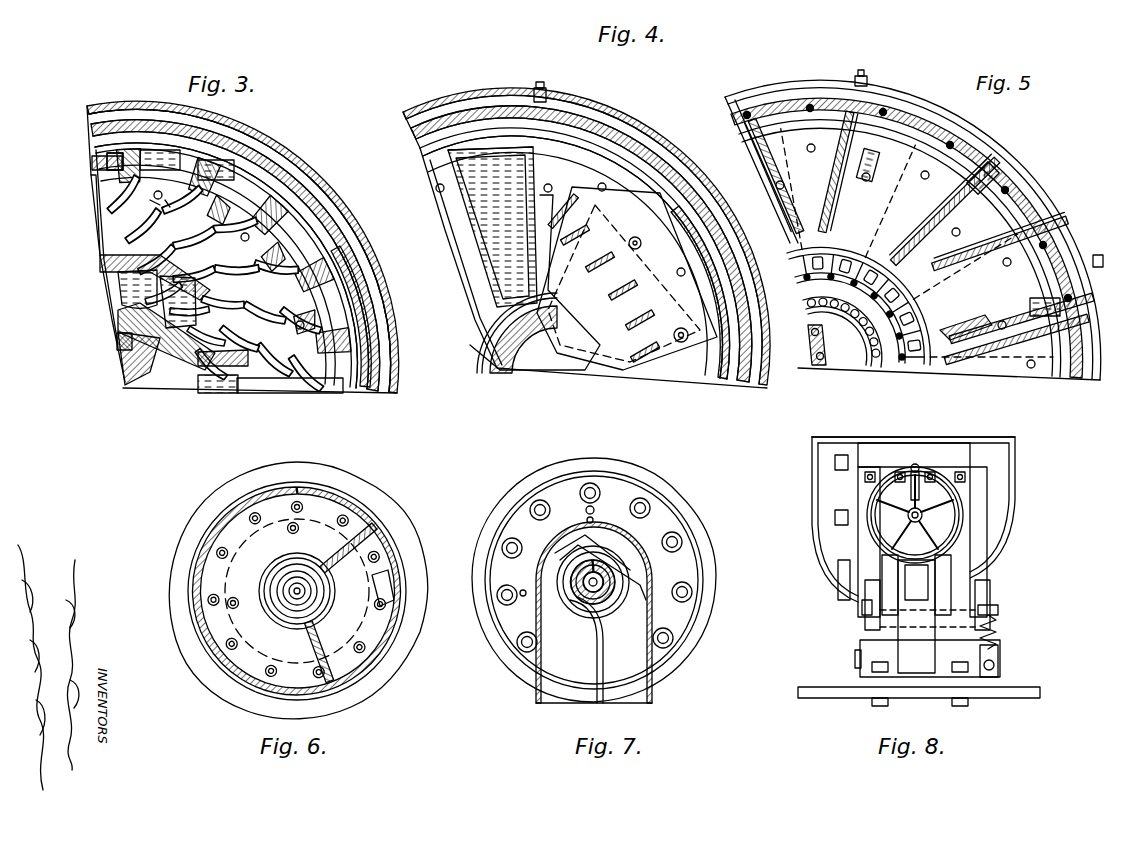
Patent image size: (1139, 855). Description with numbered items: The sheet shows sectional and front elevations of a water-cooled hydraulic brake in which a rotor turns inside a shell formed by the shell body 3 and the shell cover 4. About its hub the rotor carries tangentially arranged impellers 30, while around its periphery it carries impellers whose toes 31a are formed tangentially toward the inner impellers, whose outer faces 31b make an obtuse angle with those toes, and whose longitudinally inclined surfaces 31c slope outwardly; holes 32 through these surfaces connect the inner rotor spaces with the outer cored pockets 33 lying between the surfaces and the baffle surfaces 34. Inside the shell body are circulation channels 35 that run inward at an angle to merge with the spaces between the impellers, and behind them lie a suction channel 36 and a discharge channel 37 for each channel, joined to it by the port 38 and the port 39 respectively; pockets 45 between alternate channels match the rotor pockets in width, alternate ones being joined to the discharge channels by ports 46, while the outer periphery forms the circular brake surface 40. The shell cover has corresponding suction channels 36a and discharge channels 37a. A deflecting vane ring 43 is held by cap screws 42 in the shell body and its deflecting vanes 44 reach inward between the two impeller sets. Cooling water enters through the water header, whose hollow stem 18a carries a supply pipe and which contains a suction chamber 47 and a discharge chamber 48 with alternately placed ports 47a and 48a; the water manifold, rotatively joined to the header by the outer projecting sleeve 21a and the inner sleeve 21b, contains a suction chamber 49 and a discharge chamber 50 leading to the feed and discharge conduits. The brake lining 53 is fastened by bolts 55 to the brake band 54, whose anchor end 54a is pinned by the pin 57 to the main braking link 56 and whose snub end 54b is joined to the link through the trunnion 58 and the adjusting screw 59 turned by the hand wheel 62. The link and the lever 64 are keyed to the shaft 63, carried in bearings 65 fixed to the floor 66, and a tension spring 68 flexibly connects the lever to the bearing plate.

In FIG. 8, the shell body 3 is at (1015, 466).
In FIG. 6, the shell cover 4 is at (273, 477).
In FIG. 7, the shell cover 4 is at (602, 466).
In FIG. 8, the shell cover 4 is at (812, 472).
In FIG. 6, the water header stem 18a is at (310, 593).
In FIG. 7, the water header stem 18a is at (598, 594).
In FIG. 7, the outer projecting sleeve 21a is at (637, 563).
In FIG. 6, the inner sleeve 21b is at (307, 615).
In FIG. 7, the inner sleeve 21b is at (603, 557).
In FIG. 3, the impellers 30 is at (227, 350).
In FIG. 3, the inner ends (toes) 31a is at (172, 200).
In FIG. 3, the faces 31b is at (150, 196).
In FIG. 3, the longitudinally inclined surfaces 31c is at (147, 188).
In FIG. 3, the holes 32 is at (300, 247).
In FIG. 3, the outer cored pockets 33 is at (268, 196).
In FIG. 3, the baffle surfaces 34 is at (307, 242).
In FIG. 3, the circulation channels 35 is at (253, 388).
In FIG. 4, the circulation channels 35 is at (503, 150).
In FIG. 3, the suction channel 36 is at (300, 200).
In FIG. 4, the suction channel 36 is at (545, 112).
In FIG. 5, the suction channels 36a is at (985, 187).
In FIG. 3, the discharge channel 37 is at (246, 205).
In FIG. 4, the discharge channel 37 is at (508, 116).
In FIG. 5, the discharge channels 37a is at (962, 148).
In FIG. 4, the port 38 is at (585, 162).
In FIG. 4, the port 39 is at (490, 160).
In FIG. 5, the port 39 is at (927, 177).
In FIG. 3, the circular brake surface 40 is at (230, 165).
In FIG. 4, the circular brake surface 40 is at (572, 178).
In FIG. 5, the circular brake surface 40 is at (920, 118).
In FIG. 4, the cap screws 42 is at (653, 132).
In FIG. 3, the deflecting vane ring 43 is at (103, 185).
In FIG. 4, the deflecting vane ring 43 is at (653, 253).
In FIG. 3, the deflecting vanes 44 is at (153, 227).
In FIG. 4, the deflecting vanes 44 is at (640, 287).
In FIG. 3, the pockets 45 is at (352, 298).
In FIG. 3, the ports 46 is at (175, 108).
In FIG. 6, the suction chamber 47 is at (307, 520).
In FIG. 6, the ports 47a is at (330, 500).
In FIG. 6, the discharge chamber 48 is at (357, 570).
In FIG. 6, the ports 48a is at (380, 613).
In FIG. 7, the suction chamber 49 is at (562, 683).
In FIG. 7, the discharge chamber 50 is at (632, 681).
In FIG. 3, the brake lining 53 is at (250, 126).
In FIG. 4, the brake lining 53 is at (588, 108).
In FIG. 5, the brake lining 53 is at (875, 97).
In FIG. 3, the brake band 54 is at (212, 116).
In FIG. 4, the brake band 54 is at (605, 113).
In FIG. 5, the brake band 54 is at (902, 104).
In FIG. 8, the anchor end 54a is at (950, 448).
In FIG. 8, the snub end 54b is at (971, 601).
In FIG. 4, the bolts 55 is at (542, 84).
In FIG. 5, the bolts 55 is at (864, 80).
In FIG. 8, the main braking link 56 is at (940, 604).
In FIG. 8, the pin 57 is at (867, 620).
In FIG. 8, the trunnion 58 is at (945, 600).
In FIG. 8, the adjusting screw 59 is at (933, 568).
In FIG. 8, the hand wheel 62 is at (963, 500).
In FIG. 8, the shaft 63 is at (856, 661).
In FIG. 8, the lever 64 is at (996, 612).
In FIG. 8, the bearings 65 is at (860, 646).
In FIG. 8, the floor 66 is at (1010, 690).
In FIG. 8, the tension spring 68 is at (996, 630).